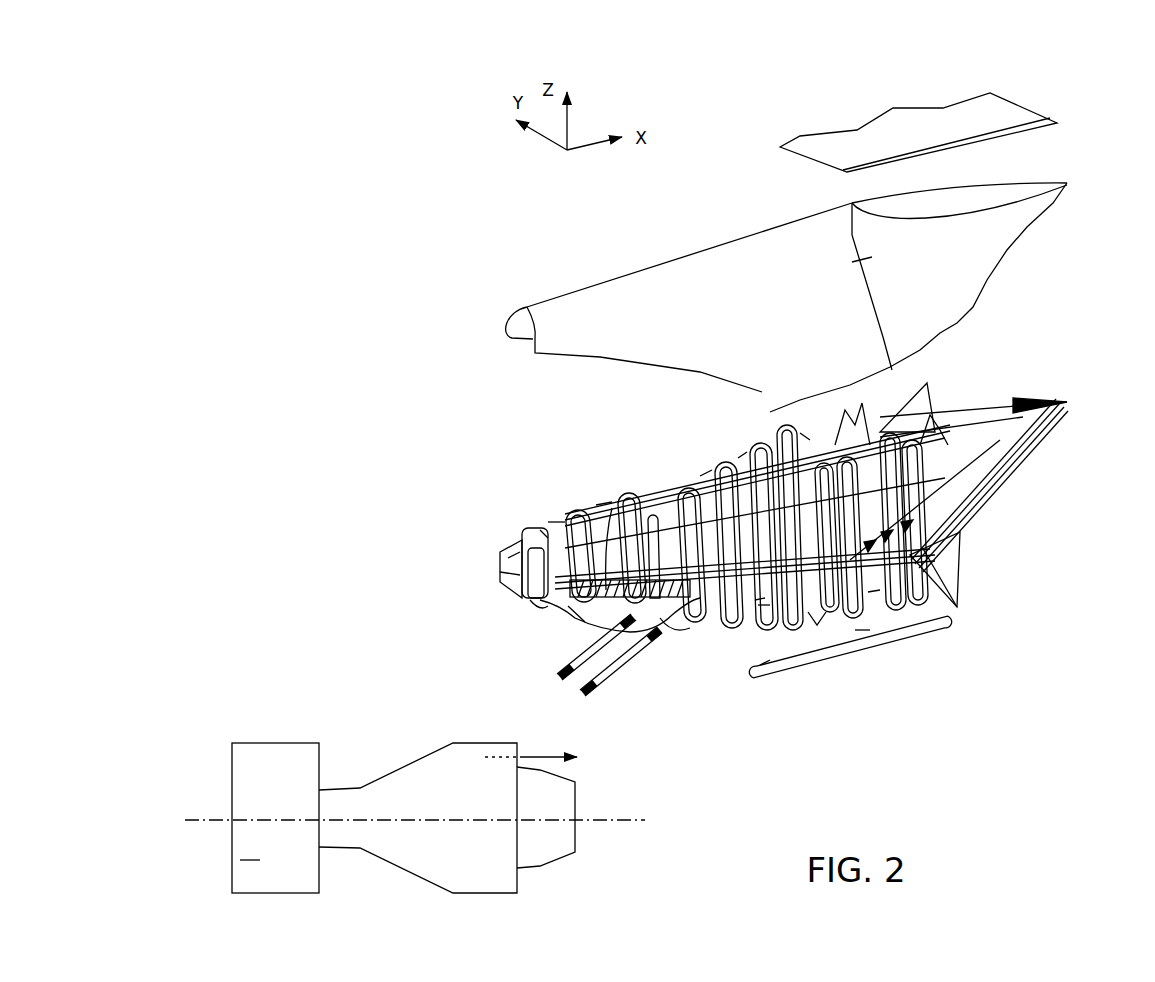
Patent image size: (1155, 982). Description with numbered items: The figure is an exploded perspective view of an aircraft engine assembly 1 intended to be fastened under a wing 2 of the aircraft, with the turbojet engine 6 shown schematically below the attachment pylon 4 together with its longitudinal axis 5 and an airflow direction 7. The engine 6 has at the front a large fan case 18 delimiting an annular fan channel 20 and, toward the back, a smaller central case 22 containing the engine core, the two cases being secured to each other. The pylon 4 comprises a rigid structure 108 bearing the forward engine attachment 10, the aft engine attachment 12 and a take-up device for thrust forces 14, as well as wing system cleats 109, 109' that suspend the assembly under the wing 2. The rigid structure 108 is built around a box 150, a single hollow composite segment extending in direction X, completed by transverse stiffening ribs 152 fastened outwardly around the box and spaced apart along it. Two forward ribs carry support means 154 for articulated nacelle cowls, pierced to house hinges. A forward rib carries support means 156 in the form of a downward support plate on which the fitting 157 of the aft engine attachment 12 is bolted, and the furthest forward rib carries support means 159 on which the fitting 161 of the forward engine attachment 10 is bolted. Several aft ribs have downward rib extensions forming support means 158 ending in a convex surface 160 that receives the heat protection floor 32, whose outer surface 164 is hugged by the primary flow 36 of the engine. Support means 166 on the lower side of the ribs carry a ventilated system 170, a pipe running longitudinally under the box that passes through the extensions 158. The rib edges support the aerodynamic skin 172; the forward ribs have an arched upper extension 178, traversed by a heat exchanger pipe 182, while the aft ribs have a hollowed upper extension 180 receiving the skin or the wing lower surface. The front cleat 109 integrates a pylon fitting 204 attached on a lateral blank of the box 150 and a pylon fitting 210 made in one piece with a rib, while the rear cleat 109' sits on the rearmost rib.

The aircraft engine assembly 1 is at (378, 312).
The wing 2 is at (1057, 85).
The attachment pylon 4 is at (607, 270).
The engine centerline axis 5 is at (200, 820).
The turbojet engine 6 is at (404, 758).
The direction of airflow 7 is at (767, 58).
The forward engine attachment 10 is at (500, 565).
The aft engine attachment 12 is at (683, 618).
The take-up device for thrust forces 14 is at (636, 652).
The fan case 18 is at (283, 763).
The annular fan channel 20 is at (260, 860).
The central case 22 is at (383, 795).
The heat protection floor 32 is at (937, 638).
The primary flow 36 is at (542, 755).
The rigid structure 108 is at (595, 492).
The front wing system cleat 109 is at (877, 378).
The rear wing system cleat 109' is at (958, 391).
The box 150 is at (546, 522).
The transverse stiffening ribs 152 is at (716, 448).
The support means for nacelle cowls 154 is at (651, 518).
The support means for aft engine attachment 156 is at (680, 628).
The fitting 157 is at (755, 600).
The support means for heat protection floor 158 is at (817, 612).
The support means for forward engine attachment 159 is at (508, 558).
The convex surface 160 is at (762, 605).
The fitting 161 is at (500, 572).
The outer surface 164 is at (540, 530).
The support means for ventilated system 166 is at (537, 603).
The ventilated system 170 is at (577, 614).
The aerodynamic skin 172 is at (782, 262).
The upper extension of forward ribs 178 is at (703, 432).
The upper extension of aft ribs 180 is at (934, 430).
The heat exchanger pipe 182 is at (614, 505).
The pylon fitting 204 is at (872, 592).
The pylon fitting 210 is at (975, 517).